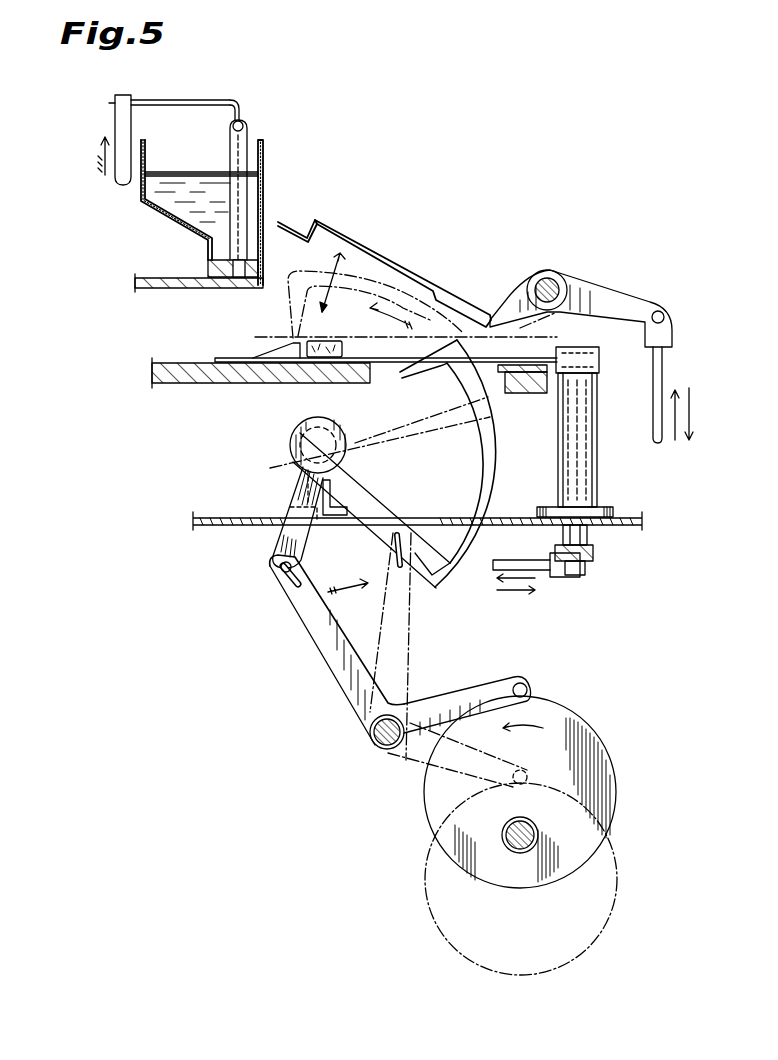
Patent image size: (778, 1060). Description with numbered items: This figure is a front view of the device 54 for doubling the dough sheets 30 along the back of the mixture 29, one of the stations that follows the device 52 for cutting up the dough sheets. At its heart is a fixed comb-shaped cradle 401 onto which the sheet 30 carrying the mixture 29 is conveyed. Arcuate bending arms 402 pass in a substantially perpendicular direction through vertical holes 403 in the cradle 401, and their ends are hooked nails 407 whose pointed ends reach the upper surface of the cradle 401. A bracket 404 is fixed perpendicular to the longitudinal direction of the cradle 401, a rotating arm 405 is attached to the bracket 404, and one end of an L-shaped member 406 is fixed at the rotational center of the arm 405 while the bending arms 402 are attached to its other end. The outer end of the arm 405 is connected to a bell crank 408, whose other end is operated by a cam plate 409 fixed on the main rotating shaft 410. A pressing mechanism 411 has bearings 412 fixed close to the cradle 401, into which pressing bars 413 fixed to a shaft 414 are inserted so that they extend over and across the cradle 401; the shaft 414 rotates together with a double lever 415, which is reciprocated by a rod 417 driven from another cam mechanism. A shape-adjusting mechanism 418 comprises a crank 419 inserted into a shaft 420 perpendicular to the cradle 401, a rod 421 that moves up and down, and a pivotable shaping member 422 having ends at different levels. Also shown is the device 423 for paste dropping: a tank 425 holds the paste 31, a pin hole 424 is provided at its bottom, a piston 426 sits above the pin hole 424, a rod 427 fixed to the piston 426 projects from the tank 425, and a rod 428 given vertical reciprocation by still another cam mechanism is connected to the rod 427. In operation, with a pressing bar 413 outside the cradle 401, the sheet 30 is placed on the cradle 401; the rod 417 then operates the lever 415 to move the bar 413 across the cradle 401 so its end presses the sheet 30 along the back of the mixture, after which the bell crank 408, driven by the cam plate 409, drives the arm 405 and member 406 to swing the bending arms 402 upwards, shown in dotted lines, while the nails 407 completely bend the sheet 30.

The mixture 29 is at (323, 350).
The sheet 30 is at (238, 358).
The paste 31 is at (205, 185).
The device for cutting up the dough sheets 52 is at (562, 538).
The device for doubling the dough sheets 54 is at (487, 166).
The cradle 401 is at (185, 376).
The arcuate bending arms 402 is at (489, 460).
The vertical holes 403 is at (377, 377).
The bracket 404 is at (290, 458).
The rotating arm 405 is at (292, 536).
The L-shaped member 406 is at (372, 507).
The hooked nails 407 is at (447, 370).
The bell crank 408 is at (335, 656).
The cam plate 409 is at (585, 747).
The main rotating shaft 410 is at (514, 853).
The pressing mechanism 411 is at (601, 467).
The bearings 412 is at (597, 438).
The pressing bars 413 is at (534, 358).
The shaft 414 is at (575, 379).
The double lever 415 is at (590, 541).
The rod 417 is at (532, 570).
The shape-adjusting mechanism 418 is at (574, 251).
The crank 419 is at (605, 300).
The shaft 420 is at (535, 276).
The rod 421 is at (656, 440).
The pivotable shaping member 422 is at (337, 234).
The device for paste dropping 423 is at (273, 146).
The pin hole 424 is at (237, 284).
The tank 425 is at (265, 209).
The piston 426 is at (208, 264).
The rod 427 is at (238, 188).
The rod 428 is at (119, 167).